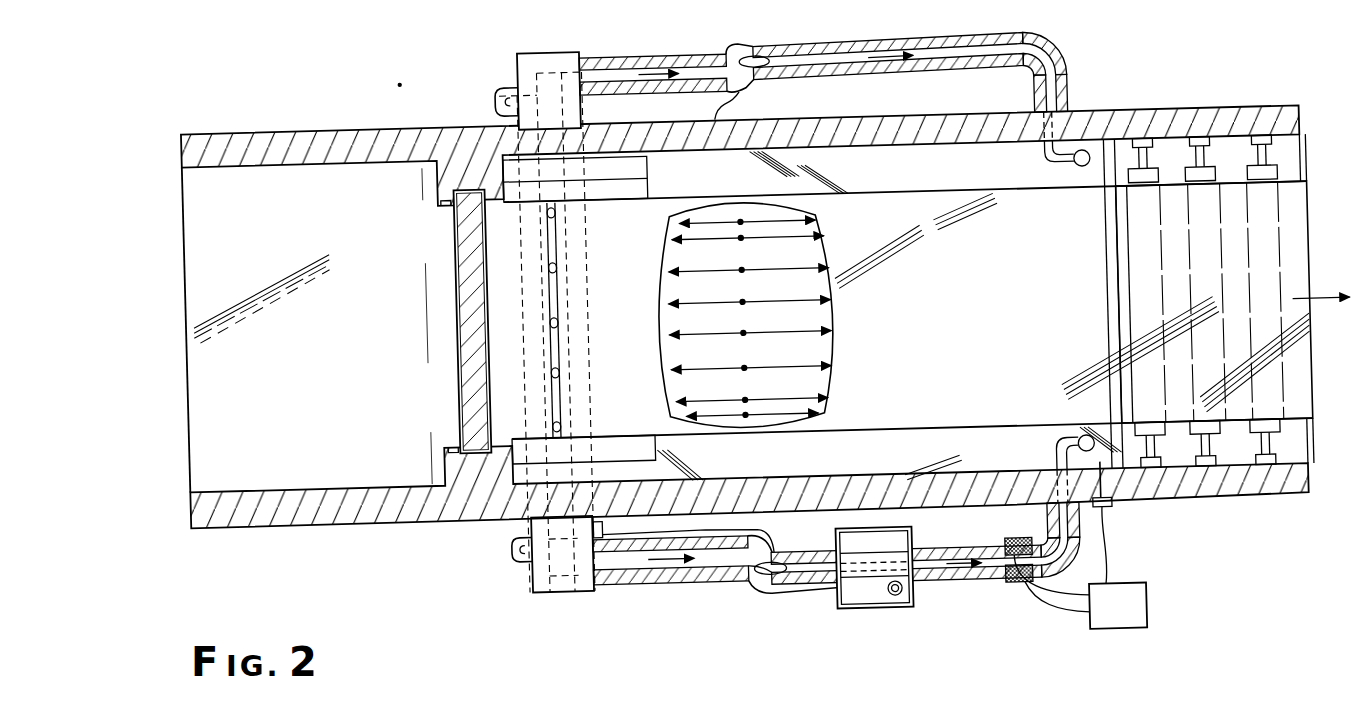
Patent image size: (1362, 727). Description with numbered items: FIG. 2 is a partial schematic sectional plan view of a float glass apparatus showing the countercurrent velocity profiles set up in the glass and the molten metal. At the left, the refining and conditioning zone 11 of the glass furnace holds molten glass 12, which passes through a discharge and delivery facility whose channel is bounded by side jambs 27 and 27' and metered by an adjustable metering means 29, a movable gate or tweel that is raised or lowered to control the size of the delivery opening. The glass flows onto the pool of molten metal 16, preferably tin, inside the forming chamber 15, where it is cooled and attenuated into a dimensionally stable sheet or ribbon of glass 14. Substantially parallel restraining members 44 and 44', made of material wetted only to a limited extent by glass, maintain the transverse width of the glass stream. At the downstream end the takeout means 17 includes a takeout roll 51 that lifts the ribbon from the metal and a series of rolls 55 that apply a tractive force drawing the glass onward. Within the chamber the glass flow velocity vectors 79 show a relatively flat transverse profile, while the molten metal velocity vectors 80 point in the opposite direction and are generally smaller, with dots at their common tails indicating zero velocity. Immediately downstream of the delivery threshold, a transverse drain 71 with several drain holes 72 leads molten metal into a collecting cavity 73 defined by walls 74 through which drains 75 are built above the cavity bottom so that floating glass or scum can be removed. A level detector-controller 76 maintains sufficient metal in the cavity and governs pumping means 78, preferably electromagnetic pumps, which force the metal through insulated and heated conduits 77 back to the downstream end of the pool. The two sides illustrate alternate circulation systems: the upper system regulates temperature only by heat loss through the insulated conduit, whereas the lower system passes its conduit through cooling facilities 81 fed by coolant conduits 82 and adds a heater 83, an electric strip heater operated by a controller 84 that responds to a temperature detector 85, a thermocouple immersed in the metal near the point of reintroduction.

The refining and conditioning zone 11 is at (266, 109).
The molten glass 12 is at (300, 325).
The sheet or ribbon of glass 14 is at (978, 345).
The forming chamber 15 is at (626, 106).
The pool of molten metal 16 is at (908, 181).
The takeout means 17 is at (1311, 107).
The side jamb 27 is at (422, 218).
The side jamb 27' is at (425, 431).
The adjustable metering means 29 is at (457, 341).
The restraining member 44 is at (599, 178).
The restraining member 44' is at (620, 450).
The takeout roll 51 is at (1132, 193).
The rolls 55 is at (1247, 180).
The transverse drain 71 is at (560, 297).
The drain holes 72 is at (560, 261).
The collecting cavity 73 is at (557, 47).
The walls 74 is at (536, 587).
The drains 75 is at (502, 94).
The level detector-controller 76 is at (598, 527).
The insulated and heated conduits 77 is at (953, 44).
The pumping means 78 is at (755, 40).
The glass flow velocity vectors 79 is at (828, 366).
The molten metal velocity vectors 80 is at (672, 333).
The cooling facilities 81 is at (906, 536).
The coolant conduits 82 is at (888, 600).
The heater 83 is at (1001, 587).
The controller 84 is at (1139, 599).
The temperature detector 85 is at (1107, 513).